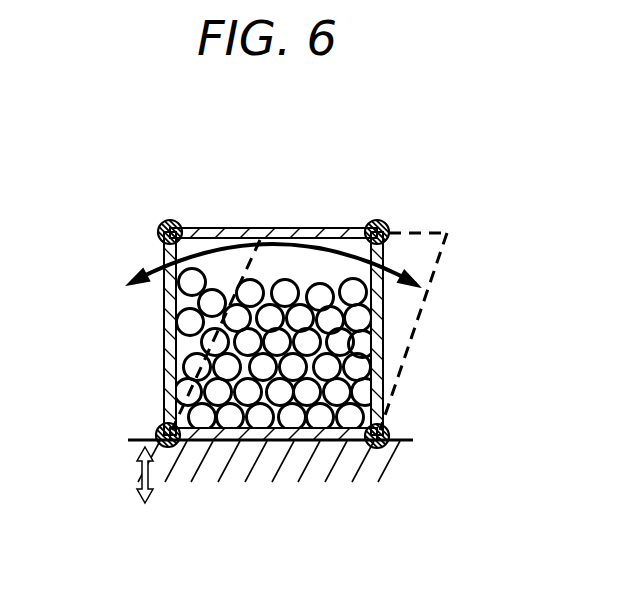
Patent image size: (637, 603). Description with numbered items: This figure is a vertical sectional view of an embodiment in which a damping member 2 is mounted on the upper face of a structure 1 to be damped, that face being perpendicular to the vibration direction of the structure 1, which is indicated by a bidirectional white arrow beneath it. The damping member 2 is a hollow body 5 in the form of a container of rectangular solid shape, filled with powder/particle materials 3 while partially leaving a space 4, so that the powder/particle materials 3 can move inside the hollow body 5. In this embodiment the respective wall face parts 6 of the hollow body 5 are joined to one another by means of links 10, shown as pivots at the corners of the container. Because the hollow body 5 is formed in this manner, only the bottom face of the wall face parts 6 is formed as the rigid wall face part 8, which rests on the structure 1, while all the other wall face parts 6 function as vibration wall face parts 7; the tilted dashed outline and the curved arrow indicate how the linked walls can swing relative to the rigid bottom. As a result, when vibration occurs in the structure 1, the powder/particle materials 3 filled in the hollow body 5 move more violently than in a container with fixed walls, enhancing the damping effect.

The structure to be damped 1 is at (140, 437).
The damping member 2 is at (308, 229).
The powder/particle materials 3 is at (205, 267).
The space 4 is at (347, 250).
The hollow body 5 is at (157, 258).
The wall face parts 6 is at (164, 313).
The vibration wall face parts 7 is at (256, 240).
The rigid wall face part 8 is at (300, 441).
The links 10 is at (163, 221).